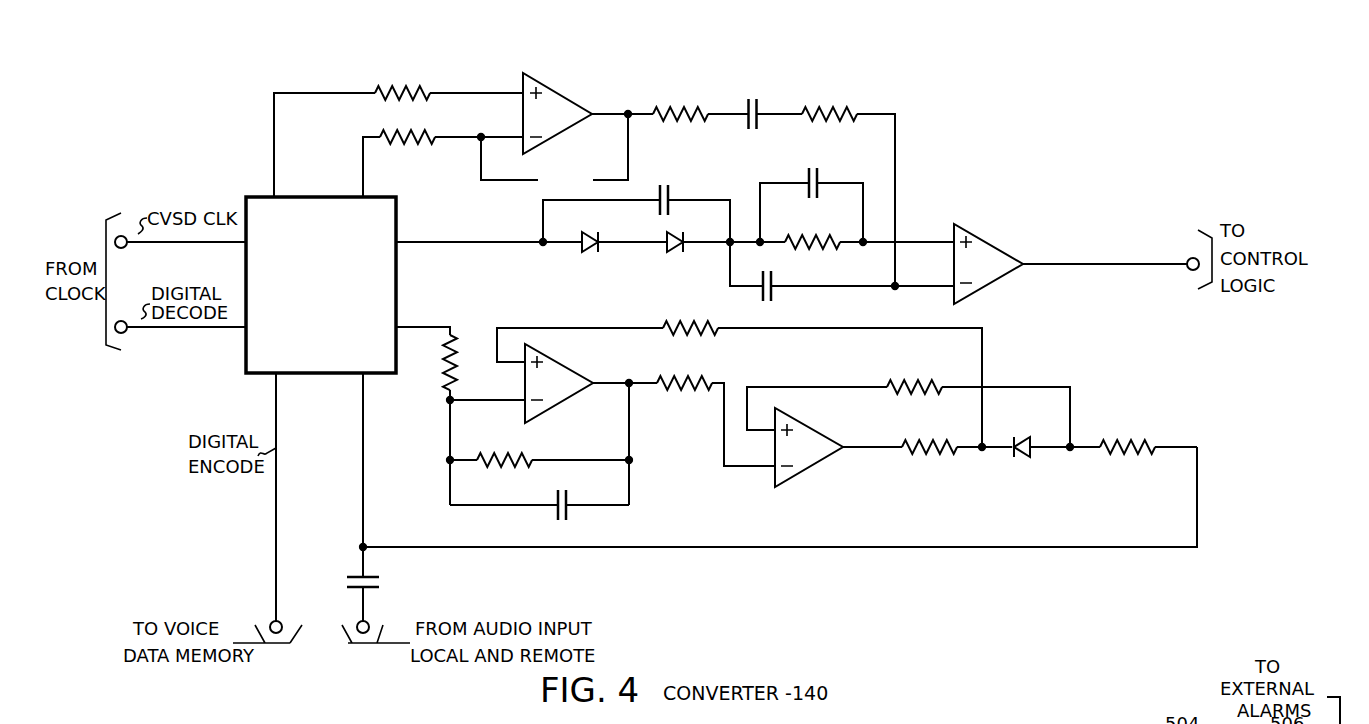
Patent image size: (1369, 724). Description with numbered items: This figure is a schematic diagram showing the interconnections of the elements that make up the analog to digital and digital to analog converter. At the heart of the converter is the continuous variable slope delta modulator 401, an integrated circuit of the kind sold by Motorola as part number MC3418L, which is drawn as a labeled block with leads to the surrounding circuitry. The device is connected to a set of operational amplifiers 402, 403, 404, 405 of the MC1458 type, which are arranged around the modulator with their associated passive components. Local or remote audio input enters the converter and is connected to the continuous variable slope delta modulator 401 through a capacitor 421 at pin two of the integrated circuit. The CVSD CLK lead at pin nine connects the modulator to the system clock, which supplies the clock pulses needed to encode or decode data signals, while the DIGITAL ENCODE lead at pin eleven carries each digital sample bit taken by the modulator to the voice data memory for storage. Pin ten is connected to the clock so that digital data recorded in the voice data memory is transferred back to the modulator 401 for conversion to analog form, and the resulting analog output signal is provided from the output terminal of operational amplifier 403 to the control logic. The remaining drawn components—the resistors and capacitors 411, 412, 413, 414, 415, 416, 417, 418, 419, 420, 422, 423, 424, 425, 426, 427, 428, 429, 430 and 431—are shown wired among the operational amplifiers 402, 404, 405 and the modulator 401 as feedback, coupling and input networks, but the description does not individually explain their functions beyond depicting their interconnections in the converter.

The continuous variable slope delta modulator 401 is at (246, 350).
The operational amplifier 402 is at (541, 82).
The operational amplifier 403 is at (980, 236).
The operational amplifier 404 is at (806, 423).
The operational amplifier 405 is at (555, 351).
The resistor 411 is at (402, 126).
The resistor 412 is at (397, 83).
The resistor 413 is at (670, 105).
The capacitor 414 is at (748, 101).
The resistor 415 is at (823, 105).
The capacitor 416 is at (658, 181).
The capacitor 417 is at (808, 170).
The resistor 418 is at (800, 250).
The capacitor 419 is at (765, 300).
The diode 420 is at (598, 251).
The capacitor 421 is at (683, 251).
The resistor 422 is at (673, 323).
The resistor 423 is at (905, 381).
The resistor 424 is at (674, 378).
The resistor 425 is at (457, 358).
The resistor 426 is at (505, 455).
The capacitor 427 is at (556, 492).
The resistor 428 is at (920, 440).
The diode 429 is at (1013, 436).
The resistor 430 is at (1115, 440).
The capacitor 431 is at (379, 592).